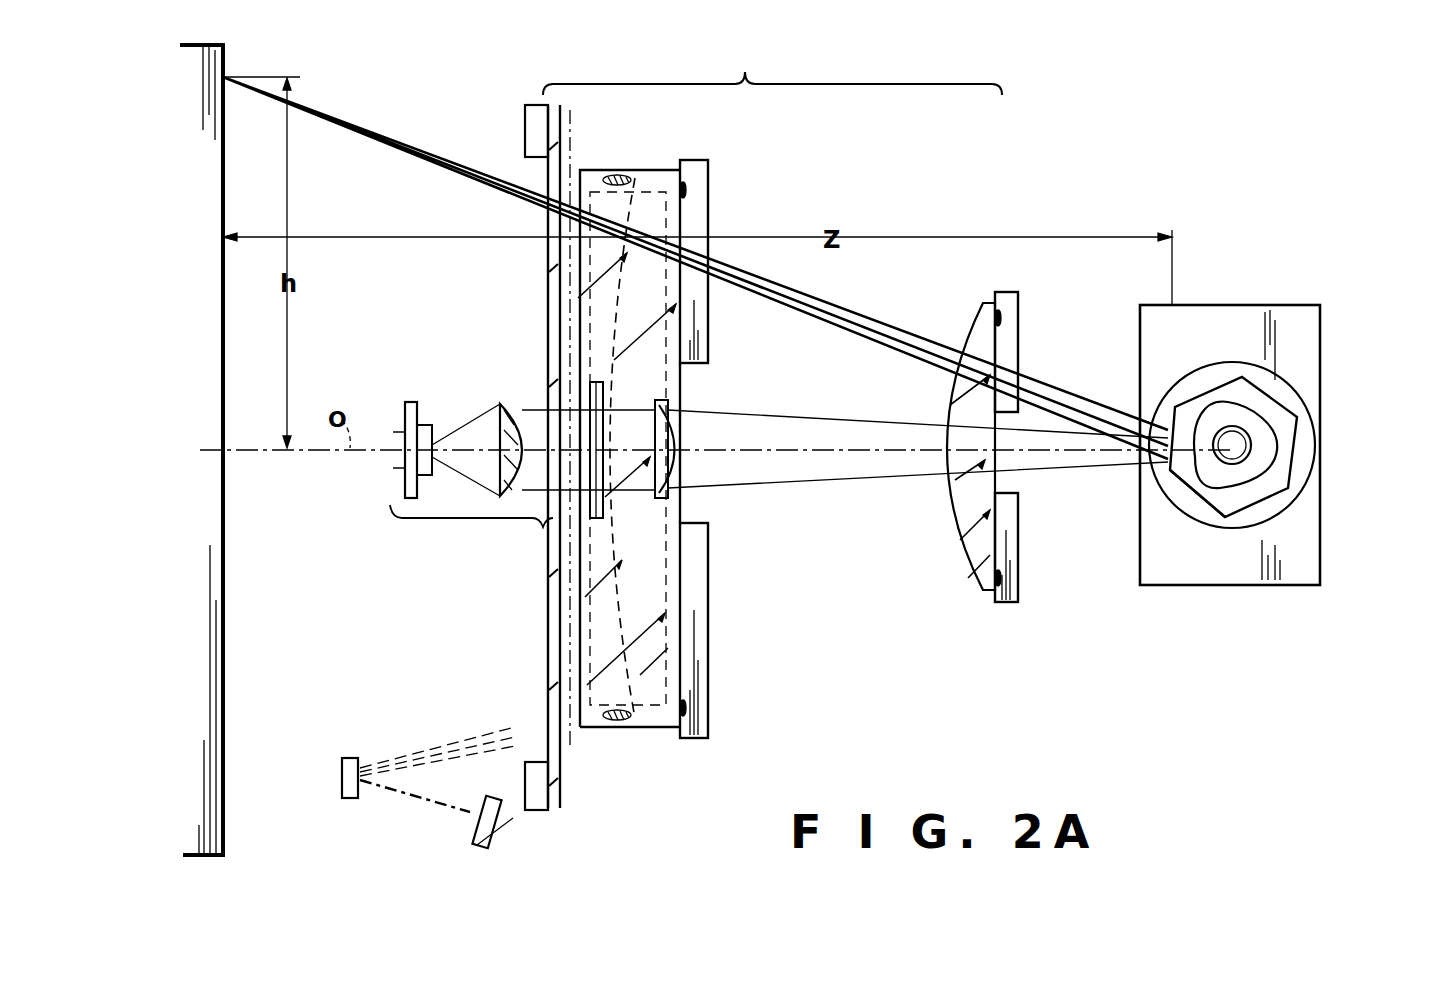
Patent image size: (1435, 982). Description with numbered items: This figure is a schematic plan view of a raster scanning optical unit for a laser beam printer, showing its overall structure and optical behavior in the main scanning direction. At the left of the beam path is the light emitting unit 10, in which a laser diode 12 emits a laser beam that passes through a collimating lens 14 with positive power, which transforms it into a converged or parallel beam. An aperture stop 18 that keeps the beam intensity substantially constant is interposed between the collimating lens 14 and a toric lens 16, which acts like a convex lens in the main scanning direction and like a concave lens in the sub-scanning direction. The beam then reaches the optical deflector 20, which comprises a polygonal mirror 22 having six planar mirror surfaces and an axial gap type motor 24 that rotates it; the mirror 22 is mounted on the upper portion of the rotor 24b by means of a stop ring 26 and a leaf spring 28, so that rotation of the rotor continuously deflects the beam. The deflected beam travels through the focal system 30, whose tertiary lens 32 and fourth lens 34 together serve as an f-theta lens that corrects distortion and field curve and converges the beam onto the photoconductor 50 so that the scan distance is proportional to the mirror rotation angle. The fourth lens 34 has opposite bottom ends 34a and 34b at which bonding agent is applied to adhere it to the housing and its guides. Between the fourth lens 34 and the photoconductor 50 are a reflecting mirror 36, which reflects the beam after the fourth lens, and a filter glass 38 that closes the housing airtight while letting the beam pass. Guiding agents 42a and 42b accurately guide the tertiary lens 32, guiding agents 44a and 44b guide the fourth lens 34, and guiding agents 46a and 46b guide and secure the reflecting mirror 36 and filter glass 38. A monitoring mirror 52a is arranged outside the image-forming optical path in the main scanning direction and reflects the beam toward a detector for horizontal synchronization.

The light emitting unit 10 is at (471, 531).
The laser diode 12 is at (412, 499).
The collimating lens 14 is at (502, 494).
The toric lens 16 is at (668, 410).
The aperture stop 18 is at (603, 392).
The optical deflector 20 is at (1218, 325).
The polygonal mirror 22 is at (1285, 420).
The axial gap type motor 24 is at (1192, 370).
The rotor 24b is at (1168, 490).
The stop ring 26 is at (1230, 458).
The leaf spring 28 is at (1265, 455).
The focal system 30 is at (772, 69).
The tertiary lens 32 is at (968, 560).
The fourth lens 34 is at (660, 728).
The end of bottom surface of fourth lens 34a is at (622, 178).
The end of bottom surface of fourth lens 34b is at (617, 722).
The reflecting mirror 36 is at (571, 760).
The filter glass 38 is at (550, 628).
The guiding agent 42a is at (1018, 307).
The guiding agent 42b is at (1018, 590).
The guiding agent 44a is at (708, 170).
The guiding agent 44b is at (708, 705).
The guiding agent 46a is at (525, 118).
The guiding agent 46b is at (535, 812).
The photoconductor 50 is at (226, 848).
The monitoring mirror 52a is at (352, 758).